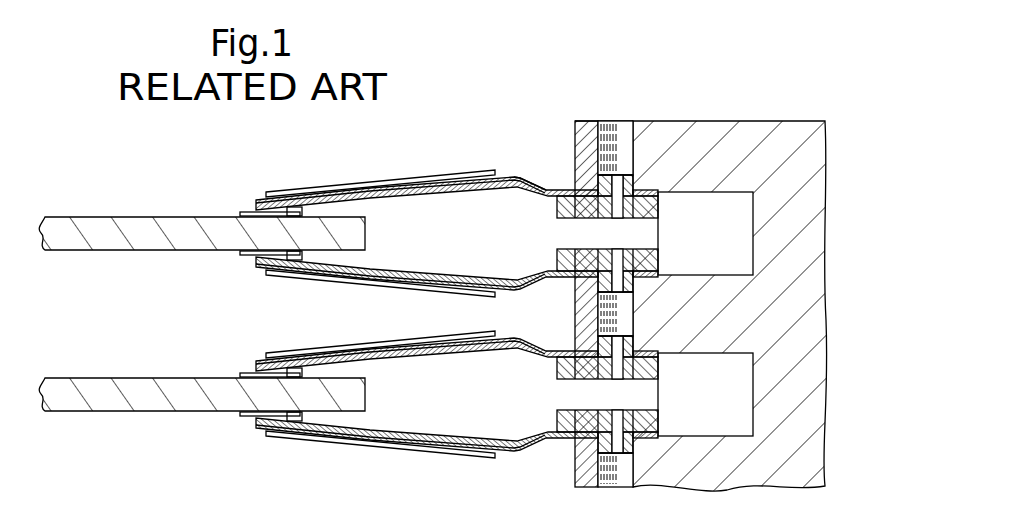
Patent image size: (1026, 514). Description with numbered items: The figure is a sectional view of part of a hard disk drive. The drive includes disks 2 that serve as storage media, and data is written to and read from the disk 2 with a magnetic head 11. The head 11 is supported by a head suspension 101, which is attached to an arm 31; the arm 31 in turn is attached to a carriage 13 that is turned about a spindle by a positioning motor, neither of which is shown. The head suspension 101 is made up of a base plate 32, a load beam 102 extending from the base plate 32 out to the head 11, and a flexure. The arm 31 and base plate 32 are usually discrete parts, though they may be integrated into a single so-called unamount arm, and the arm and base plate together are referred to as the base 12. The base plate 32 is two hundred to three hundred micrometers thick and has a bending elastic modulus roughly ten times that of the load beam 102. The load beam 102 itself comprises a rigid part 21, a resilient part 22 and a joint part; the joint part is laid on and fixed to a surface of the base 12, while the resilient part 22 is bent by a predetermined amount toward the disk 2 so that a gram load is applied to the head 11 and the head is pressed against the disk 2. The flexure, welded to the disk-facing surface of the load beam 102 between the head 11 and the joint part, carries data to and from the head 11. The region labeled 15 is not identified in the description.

The disk 2 is at (115, 216).
The magnetic head 11 is at (243, 258).
The base 12 is at (712, 200).
The carriage 13 is at (780, 117).
The gap 15 is at (446, 197).
The rigid part 21 is at (333, 183).
The resilient part 22 is at (522, 177).
The arm 31 is at (702, 120).
The base plate 32 is at (573, 218).
The head suspension 101 is at (390, 178).
The load beam 102 is at (447, 168).